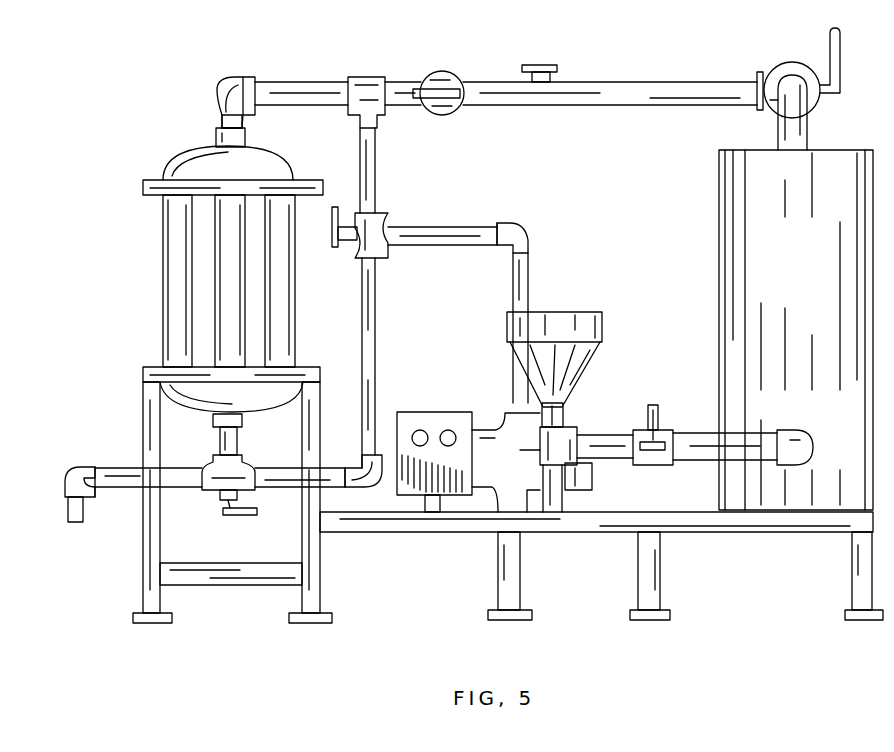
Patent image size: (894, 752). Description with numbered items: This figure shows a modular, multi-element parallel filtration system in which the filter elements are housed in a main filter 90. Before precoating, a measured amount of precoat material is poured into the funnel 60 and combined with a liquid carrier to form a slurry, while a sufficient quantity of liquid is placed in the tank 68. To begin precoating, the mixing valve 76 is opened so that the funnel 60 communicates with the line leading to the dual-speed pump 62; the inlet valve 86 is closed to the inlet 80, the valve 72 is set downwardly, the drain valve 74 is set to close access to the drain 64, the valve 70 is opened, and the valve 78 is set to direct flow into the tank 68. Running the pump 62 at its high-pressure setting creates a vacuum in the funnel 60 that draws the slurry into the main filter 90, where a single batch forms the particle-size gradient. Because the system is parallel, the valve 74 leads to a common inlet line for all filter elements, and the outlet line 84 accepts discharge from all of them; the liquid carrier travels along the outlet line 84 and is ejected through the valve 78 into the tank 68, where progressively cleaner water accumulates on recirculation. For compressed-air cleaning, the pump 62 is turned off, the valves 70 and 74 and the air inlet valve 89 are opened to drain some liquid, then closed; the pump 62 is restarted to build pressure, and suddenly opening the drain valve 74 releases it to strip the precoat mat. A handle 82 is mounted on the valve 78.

The funnel 60 is at (566, 302).
The dual-speed pump 62 is at (425, 403).
The drain 64 is at (73, 528).
The tank 68 is at (815, 257).
The valve 70 is at (450, 78).
The valve 72 is at (385, 218).
The drain valve 74 is at (223, 503).
The mixing valve 76 is at (658, 430).
The valve 78 is at (790, 64).
The inlet 80 is at (592, 478).
The valve handle 82 is at (818, 105).
The outlet line 84 is at (618, 82).
The inlet valve 86 is at (576, 430).
The air inlet valve 89 is at (542, 65).
The main filter 90 is at (158, 240).